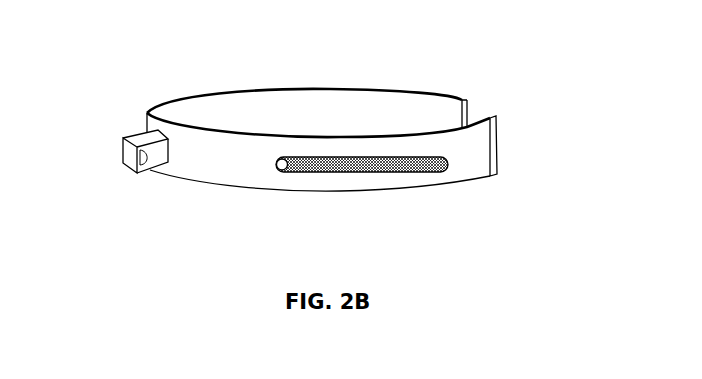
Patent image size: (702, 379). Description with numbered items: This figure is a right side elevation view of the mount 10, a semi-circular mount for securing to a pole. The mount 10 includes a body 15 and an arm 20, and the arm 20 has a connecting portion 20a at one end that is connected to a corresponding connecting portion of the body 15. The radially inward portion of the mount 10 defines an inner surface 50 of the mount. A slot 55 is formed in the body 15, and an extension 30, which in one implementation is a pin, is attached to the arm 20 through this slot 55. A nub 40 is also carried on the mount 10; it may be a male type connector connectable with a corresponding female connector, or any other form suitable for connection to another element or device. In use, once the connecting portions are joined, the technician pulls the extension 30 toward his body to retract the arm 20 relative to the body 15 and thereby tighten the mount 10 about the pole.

The mount 10 is at (516, 264).
The body 15 is at (380, 181).
The arm 20 is at (397, 155).
The connecting portion 20a is at (508, 188).
The extension 30 is at (281, 170).
The nub 40 is at (118, 188).
The inner surface 50 is at (381, 103).
The slot 55 is at (306, 133).